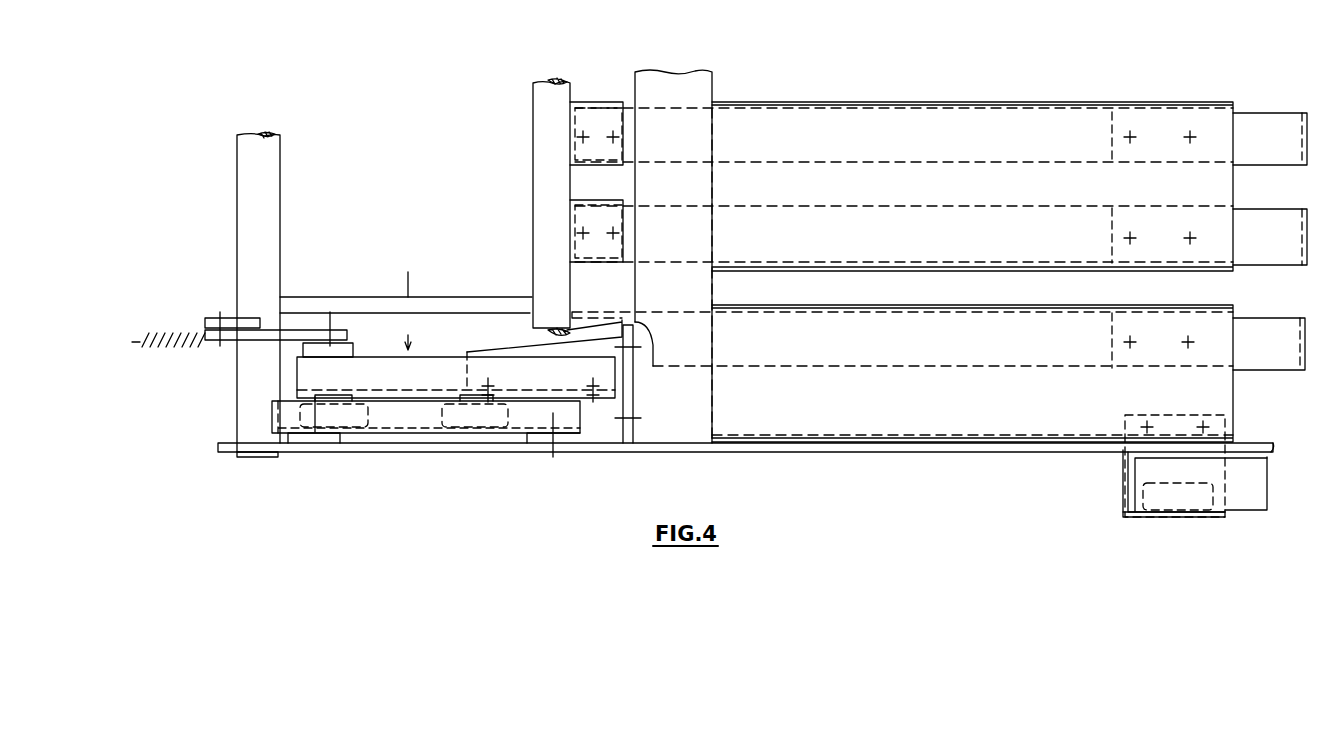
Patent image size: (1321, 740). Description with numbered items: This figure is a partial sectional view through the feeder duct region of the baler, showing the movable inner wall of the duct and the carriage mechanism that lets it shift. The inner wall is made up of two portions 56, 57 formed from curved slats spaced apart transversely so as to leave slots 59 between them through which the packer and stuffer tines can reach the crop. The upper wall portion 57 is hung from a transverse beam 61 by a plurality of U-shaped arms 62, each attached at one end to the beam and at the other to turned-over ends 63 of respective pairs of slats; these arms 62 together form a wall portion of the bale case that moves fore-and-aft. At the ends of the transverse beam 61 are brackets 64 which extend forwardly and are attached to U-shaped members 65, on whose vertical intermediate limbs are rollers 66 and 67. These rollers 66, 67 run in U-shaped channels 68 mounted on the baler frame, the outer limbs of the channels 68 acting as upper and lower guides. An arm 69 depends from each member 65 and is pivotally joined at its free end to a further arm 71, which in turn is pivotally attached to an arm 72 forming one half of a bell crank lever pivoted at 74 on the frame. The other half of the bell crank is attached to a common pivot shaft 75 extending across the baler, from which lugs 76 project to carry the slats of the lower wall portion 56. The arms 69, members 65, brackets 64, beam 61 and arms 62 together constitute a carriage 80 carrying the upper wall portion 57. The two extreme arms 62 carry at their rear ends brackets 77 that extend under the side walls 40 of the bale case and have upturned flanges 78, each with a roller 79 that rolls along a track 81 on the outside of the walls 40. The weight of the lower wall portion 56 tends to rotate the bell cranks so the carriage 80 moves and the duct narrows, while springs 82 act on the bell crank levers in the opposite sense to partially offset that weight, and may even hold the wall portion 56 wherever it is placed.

The side wall 40 is at (789, 452).
The inner wall portion 56 is at (634, 95).
The inner wall portion 57 is at (1260, 160).
The slot 59 is at (1255, 200).
The transverse beam 61 is at (710, 411).
The U-shaped arm 62 is at (920, 102).
The turned-over end 63 is at (1112, 127).
The bracket 64 is at (525, 352).
The U-shaped member 65 is at (437, 360).
The roller 66 is at (368, 418).
The roller 67 is at (446, 416).
The channel 68 is at (580, 420).
The arm 69 is at (348, 352).
The arm 71 is at (298, 317).
The arm 72 is at (228, 318).
The pivot 74 is at (280, 203).
The pivot shaft 75 is at (535, 111).
The lug 76 is at (594, 102).
The bracket 77 is at (1123, 487).
The upturned flange 78 is at (1158, 518).
The roller 79 is at (1190, 513).
The carriage 80 is at (405, 298).
The track 81 is at (1245, 505).
The spring 82 is at (175, 349).